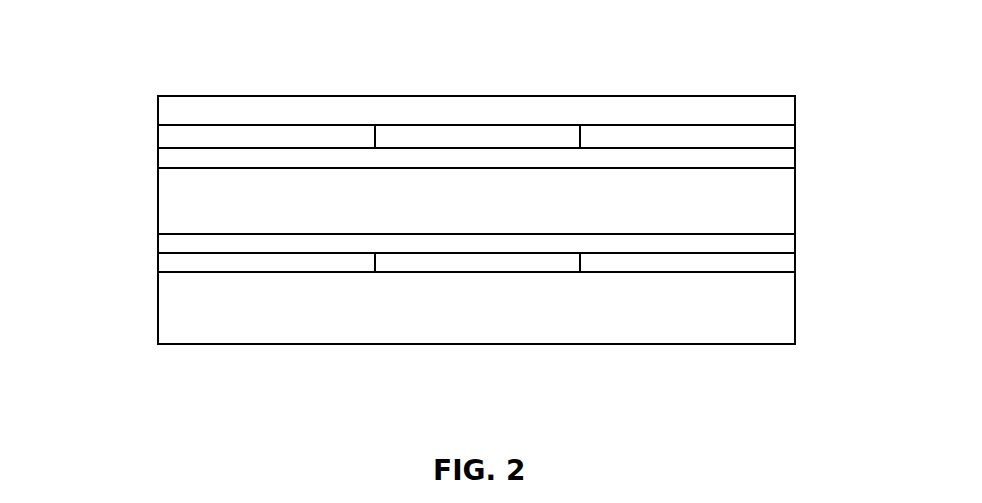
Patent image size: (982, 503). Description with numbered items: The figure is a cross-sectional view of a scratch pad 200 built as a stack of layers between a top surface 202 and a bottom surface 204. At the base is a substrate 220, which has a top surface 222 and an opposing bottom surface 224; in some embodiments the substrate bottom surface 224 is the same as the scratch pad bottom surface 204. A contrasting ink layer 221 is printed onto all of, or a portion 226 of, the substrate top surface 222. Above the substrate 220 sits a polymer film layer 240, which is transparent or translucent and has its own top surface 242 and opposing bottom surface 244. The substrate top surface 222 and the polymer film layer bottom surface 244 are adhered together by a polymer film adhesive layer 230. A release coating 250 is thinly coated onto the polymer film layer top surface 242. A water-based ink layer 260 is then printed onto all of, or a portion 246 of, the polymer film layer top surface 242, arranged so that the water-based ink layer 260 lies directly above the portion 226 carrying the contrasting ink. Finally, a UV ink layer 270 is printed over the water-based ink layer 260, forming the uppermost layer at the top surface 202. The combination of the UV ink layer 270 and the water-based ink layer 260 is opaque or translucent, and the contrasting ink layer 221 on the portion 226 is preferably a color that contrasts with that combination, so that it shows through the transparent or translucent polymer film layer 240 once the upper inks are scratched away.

The scratch pad 200 is at (133, 47).
The top surface 202 is at (443, 89).
The bottom surface 204 is at (445, 349).
The substrate 220 is at (800, 272).
The contrasting ink layer 221 is at (777, 265).
The top surface 222 is at (240, 269).
The bottom surface 224 is at (187, 348).
The portion 226 is at (477, 265).
The polymer film adhesive layer 230 is at (777, 245).
The polymer film layer 240 is at (777, 202).
The top surface 242 is at (240, 164).
The bottom surface 244 is at (187, 240).
The portion 246 is at (477, 138).
The release coating 250 is at (777, 159).
The water-based ink layer 260 is at (159, 137).
The UV ink layer 270 is at (798, 110).